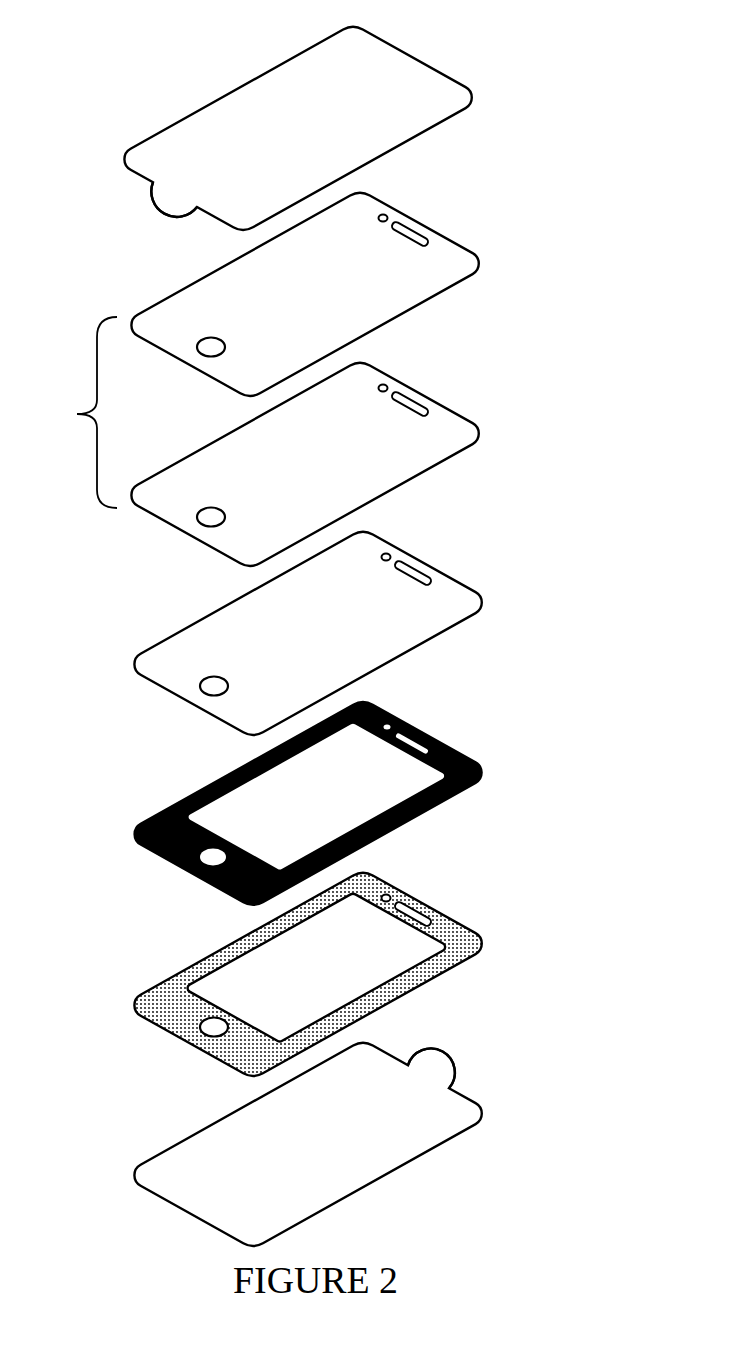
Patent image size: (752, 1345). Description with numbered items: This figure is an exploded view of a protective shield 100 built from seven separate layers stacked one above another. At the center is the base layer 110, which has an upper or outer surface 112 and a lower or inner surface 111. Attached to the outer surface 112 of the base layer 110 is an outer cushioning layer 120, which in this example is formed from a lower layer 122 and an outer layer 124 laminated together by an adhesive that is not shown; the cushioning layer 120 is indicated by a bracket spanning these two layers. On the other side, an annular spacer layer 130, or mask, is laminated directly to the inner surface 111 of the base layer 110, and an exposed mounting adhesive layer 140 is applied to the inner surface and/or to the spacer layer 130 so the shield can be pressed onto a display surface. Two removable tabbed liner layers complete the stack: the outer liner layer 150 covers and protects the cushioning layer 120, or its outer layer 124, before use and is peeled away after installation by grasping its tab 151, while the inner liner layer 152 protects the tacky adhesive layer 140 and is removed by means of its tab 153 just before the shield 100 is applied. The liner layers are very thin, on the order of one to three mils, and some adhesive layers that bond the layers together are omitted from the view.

The shield 100 is at (555, 70).
The base layer 110 is at (190, 697).
The inner surface of the base layer 111 is at (430, 658).
The outer surface of the base layer 112 is at (242, 625).
The cushioning layer 120 is at (77, 414).
The lower layer 122 is at (412, 467).
The outer layer 124 is at (458, 252).
The spacer layer 130 is at (448, 797).
The mounting adhesive layer 140 is at (190, 1040).
The outer liner layer 150 is at (243, 100).
The tab 151 is at (167, 208).
The inner liner layer 152 is at (417, 1143).
The tab 153 is at (436, 1050).